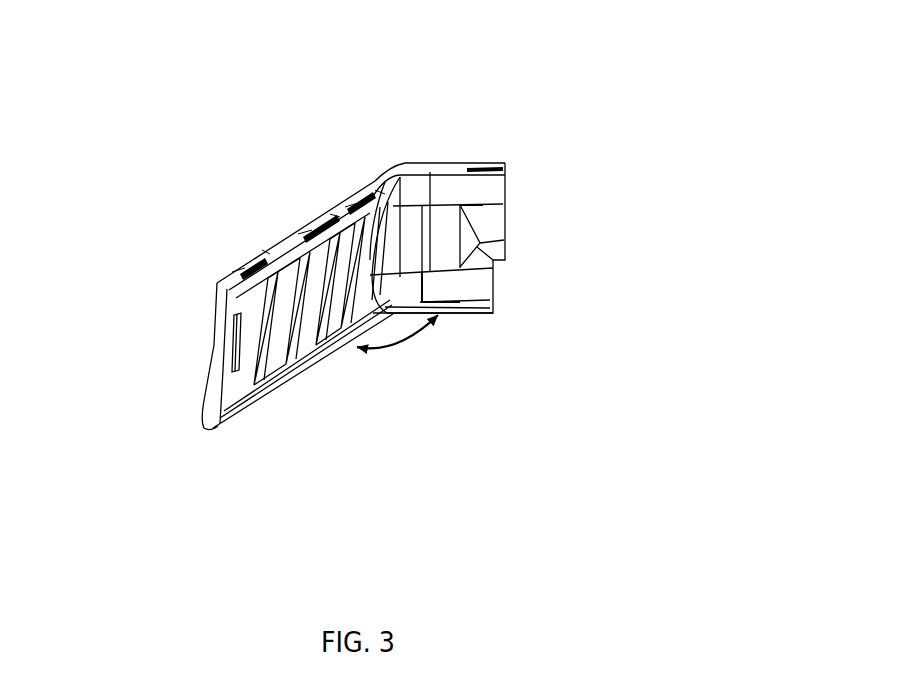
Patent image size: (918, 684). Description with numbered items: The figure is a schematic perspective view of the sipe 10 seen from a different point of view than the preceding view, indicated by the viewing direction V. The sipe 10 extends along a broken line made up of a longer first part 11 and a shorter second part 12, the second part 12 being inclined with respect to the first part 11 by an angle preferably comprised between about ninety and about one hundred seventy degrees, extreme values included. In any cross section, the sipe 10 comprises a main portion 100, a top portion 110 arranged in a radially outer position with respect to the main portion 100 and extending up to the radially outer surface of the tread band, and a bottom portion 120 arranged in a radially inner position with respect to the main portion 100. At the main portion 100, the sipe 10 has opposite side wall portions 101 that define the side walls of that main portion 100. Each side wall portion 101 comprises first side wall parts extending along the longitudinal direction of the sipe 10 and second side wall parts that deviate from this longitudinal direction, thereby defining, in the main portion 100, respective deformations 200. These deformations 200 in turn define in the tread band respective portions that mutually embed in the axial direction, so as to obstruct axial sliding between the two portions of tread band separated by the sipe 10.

The sipe 10 is at (398, 296).
The first part 11 is at (308, 378).
The second part 12 is at (458, 320).
The main portion 100 is at (515, 241).
The side wall portion 101 is at (218, 340).
The top portion 110 is at (473, 190).
The bottom portion 120 is at (475, 291).
The deformation 200 is at (362, 243).
The viewing direction V is at (389, 154).